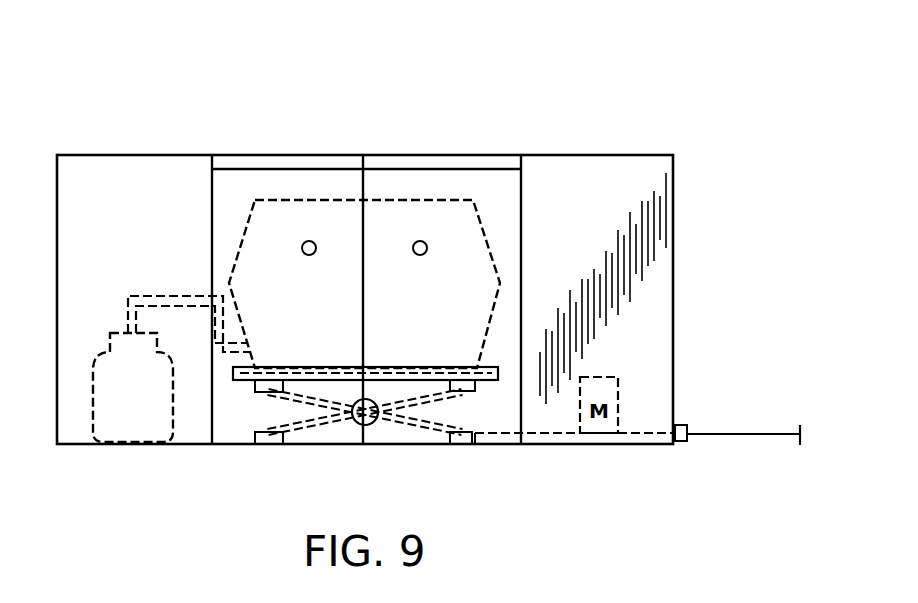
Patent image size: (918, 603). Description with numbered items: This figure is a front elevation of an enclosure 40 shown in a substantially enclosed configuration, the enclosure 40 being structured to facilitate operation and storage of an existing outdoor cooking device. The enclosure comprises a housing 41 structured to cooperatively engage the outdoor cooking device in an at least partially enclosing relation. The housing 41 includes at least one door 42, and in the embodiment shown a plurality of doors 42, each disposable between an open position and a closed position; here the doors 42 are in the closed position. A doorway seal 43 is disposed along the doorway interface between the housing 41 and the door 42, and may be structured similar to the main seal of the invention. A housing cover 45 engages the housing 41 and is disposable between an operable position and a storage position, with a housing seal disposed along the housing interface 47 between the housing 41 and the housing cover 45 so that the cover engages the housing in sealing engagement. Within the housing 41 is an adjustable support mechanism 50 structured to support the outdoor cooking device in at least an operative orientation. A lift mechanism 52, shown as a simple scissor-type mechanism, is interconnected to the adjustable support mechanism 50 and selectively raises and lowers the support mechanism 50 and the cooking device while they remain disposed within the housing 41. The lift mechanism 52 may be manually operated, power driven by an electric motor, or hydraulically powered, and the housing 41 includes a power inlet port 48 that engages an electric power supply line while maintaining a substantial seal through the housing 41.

The enclosure 40 is at (604, 130).
The housing 41 is at (675, 210).
The door 42 is at (246, 199).
The doorway seal 43 is at (522, 188).
The housing cover 45 is at (303, 155).
The housing interface 47 is at (210, 155).
The power inlet port 48 is at (680, 425).
The adjustable support mechanism 50 is at (260, 407).
The lift mechanism 52 is at (467, 432).